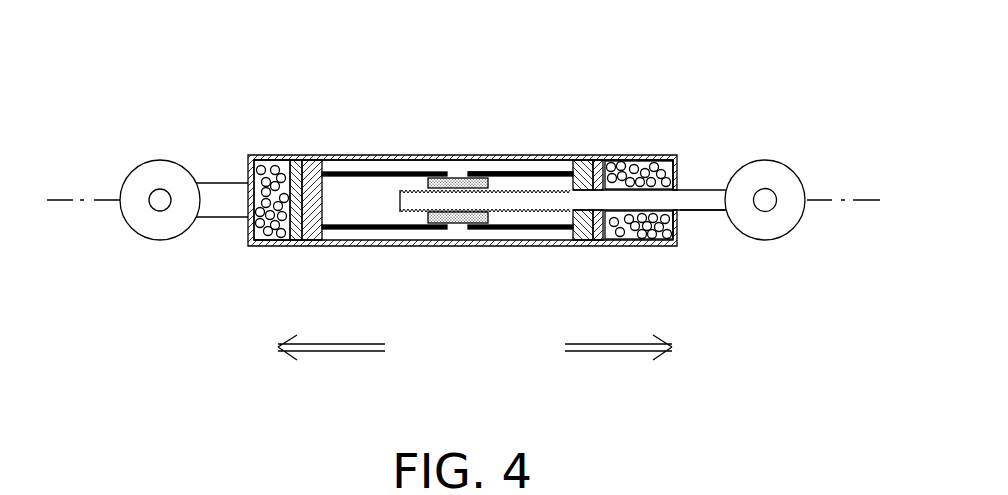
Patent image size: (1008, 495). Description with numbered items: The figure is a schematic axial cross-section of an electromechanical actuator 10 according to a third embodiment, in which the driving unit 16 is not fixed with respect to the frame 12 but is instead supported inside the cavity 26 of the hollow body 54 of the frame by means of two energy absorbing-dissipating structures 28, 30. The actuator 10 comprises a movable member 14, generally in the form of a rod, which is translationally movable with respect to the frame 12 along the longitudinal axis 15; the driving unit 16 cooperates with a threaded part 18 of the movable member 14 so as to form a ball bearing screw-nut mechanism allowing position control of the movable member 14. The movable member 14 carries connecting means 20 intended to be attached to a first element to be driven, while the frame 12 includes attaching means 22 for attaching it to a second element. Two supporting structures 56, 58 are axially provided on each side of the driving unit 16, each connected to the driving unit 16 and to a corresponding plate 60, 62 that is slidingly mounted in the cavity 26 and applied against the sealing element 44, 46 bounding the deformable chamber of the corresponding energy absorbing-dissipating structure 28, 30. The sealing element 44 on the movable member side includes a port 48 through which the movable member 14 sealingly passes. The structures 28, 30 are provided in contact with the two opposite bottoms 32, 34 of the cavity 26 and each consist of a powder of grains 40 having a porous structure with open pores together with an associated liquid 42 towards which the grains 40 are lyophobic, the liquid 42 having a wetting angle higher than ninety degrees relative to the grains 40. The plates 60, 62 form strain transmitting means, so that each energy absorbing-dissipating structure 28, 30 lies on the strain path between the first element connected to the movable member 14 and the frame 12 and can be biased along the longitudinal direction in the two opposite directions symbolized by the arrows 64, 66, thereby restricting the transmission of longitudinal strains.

The electromechanical actuator 10 is at (509, 93).
The frame 12 is at (370, 248).
The movable member 14 is at (712, 189).
The longitudinal axis 15 is at (865, 203).
The driving unit 16 is at (468, 158).
The threaded part 18 is at (710, 212).
The connecting means 20 is at (772, 226).
The attaching means 22 is at (152, 232).
The cavity 26 is at (374, 158).
The first energy absorbing-dissipating structure 28 is at (272, 241).
The second energy absorbing-dissipating structure 30 is at (655, 242).
The first bottom of the cavity 32 is at (248, 165).
The second bottom of the cavity 34 is at (680, 178).
The grains 40 is at (262, 158).
The liquid 42 is at (278, 160).
The first sealing element 44 is at (300, 246).
The second sealing element 46 is at (603, 158).
The port 48 is at (586, 161).
The hollow body of the frame 54 is at (432, 242).
The first supporting structure 56 is at (417, 158).
The second supporting structure 58 is at (530, 158).
The first plate 60 is at (311, 160).
The second plate 62 is at (583, 242).
The first direction arrow 64 is at (340, 352).
The second direction arrow 66 is at (622, 352).